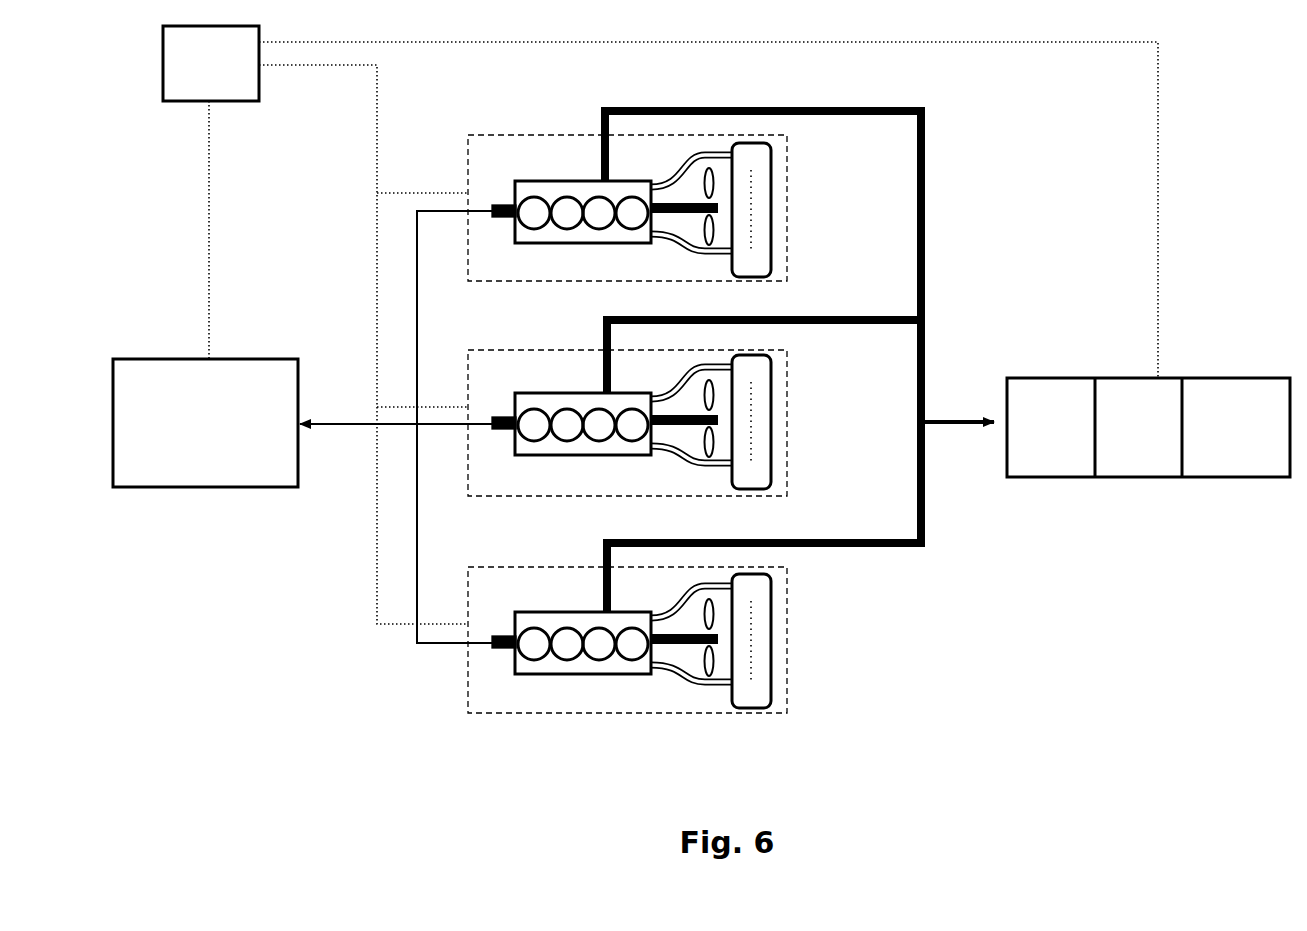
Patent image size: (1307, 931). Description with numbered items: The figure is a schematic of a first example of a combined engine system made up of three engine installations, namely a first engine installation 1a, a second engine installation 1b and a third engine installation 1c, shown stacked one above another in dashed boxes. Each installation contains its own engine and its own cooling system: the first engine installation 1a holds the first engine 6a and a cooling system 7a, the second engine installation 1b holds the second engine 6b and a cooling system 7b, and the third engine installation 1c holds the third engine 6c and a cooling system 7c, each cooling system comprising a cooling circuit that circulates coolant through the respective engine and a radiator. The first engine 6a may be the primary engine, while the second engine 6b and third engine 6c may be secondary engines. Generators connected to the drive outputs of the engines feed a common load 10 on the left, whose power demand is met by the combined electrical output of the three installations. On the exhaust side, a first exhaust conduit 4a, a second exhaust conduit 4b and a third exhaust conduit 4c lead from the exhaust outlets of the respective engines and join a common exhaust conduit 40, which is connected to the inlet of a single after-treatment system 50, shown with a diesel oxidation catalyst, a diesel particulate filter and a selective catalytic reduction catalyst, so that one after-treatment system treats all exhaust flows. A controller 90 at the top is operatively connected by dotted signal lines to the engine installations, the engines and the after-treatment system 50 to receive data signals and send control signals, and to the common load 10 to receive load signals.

The controller 90 is at (211, 63).
The common load 10 is at (205, 423).
The first engine installation 1a is at (661, 182).
The second engine installation 1b is at (661, 404).
The third engine installation 1c is at (661, 619).
The first exhaust conduit 4a is at (717, 108).
The second exhaust conduit 4b is at (640, 316).
The third exhaust conduit 4c is at (648, 540).
The first engine 6a is at (580, 181).
The second engine 6b is at (583, 407).
The third engine 6c is at (583, 627).
The cooling system 7a is at (772, 213).
The cooling system 7b is at (793, 422).
The cooling system 7c is at (793, 641).
The common exhaust conduit 40 is at (958, 415).
The after-treatment system 50 is at (1138, 378).